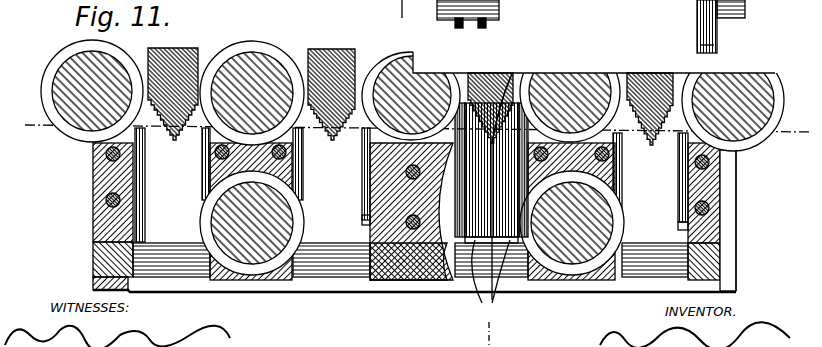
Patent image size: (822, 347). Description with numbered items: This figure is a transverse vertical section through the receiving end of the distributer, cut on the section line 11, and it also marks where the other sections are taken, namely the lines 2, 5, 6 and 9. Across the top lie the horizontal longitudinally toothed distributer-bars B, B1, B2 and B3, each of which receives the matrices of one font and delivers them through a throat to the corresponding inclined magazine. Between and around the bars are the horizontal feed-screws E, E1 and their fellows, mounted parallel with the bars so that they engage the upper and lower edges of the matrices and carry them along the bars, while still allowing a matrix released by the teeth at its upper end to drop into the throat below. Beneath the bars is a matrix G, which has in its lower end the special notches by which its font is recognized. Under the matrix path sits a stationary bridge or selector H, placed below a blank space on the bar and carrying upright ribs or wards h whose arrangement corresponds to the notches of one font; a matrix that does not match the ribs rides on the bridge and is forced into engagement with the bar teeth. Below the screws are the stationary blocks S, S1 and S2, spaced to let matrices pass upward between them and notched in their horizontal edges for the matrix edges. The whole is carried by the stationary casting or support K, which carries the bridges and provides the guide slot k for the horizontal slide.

The feed-screw E is at (58, 57).
The feed-screw E1 is at (280, 53).
The distributer-bar B is at (196, 52).
The distributer-bar B1 is at (355, 52).
The distributer-bar B2 is at (507, 63).
The distributer-bar B3 is at (662, 65).
The stationary block S is at (210, 168).
The stationary block S1 is at (385, 198).
The stationary block S2 is at (620, 188).
The matrix G is at (491, 173).
The bridge H is at (491, 271).
The rib h is at (482, 327).
The casting K is at (737, 293).
The guide slot k is at (738, 277).
The section line 9 is at (412, 120).
The section line 6 is at (525, 70).
The section line 2 is at (468, 23).
The section line 5 is at (403, 18).
The section line 11 is at (379, 17).